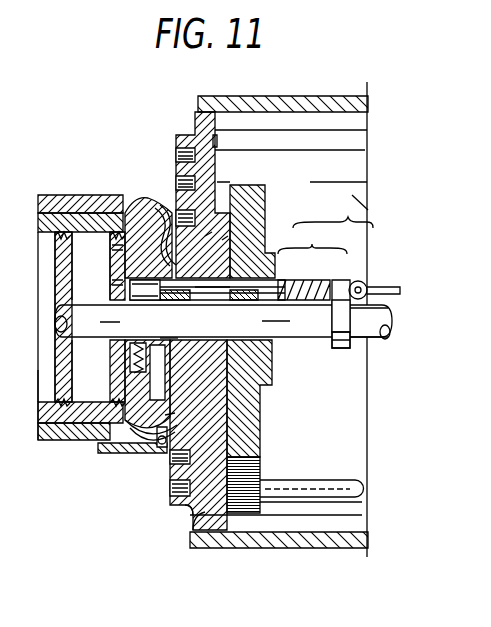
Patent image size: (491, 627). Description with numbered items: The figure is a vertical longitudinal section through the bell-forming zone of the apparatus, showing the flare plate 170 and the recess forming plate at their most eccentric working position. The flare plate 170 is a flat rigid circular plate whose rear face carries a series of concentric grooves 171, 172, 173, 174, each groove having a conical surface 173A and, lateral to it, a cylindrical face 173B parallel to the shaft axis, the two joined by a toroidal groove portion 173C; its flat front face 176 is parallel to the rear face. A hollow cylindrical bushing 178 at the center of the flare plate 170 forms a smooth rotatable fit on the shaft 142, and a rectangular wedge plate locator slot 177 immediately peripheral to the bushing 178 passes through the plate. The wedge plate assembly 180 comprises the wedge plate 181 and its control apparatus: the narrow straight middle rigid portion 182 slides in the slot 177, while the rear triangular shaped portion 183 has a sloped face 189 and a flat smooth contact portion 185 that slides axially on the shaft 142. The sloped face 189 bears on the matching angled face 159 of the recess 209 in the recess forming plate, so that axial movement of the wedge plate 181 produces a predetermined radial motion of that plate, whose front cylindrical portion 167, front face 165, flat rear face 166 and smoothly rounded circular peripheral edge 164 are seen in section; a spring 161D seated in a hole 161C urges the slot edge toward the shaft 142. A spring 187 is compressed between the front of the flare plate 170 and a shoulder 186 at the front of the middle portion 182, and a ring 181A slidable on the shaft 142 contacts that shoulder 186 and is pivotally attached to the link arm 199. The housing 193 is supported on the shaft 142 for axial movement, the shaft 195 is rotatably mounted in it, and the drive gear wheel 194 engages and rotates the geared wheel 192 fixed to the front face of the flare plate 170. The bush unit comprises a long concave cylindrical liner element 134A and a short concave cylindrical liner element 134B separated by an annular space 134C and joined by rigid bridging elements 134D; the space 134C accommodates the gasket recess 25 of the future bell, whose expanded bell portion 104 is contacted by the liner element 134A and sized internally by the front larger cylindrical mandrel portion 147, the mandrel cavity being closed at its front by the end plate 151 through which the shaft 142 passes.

The flare plate 170 is at (176, 110).
The cylindrical face 173B is at (176, 150).
The conical surface 173A is at (176, 182).
The short concave cylindrical liner element 134B is at (167, 190).
The toroidal groove portion 173C is at (234, 141).
The geared wheel 192 is at (250, 192).
The front cylindrical portion 167 is at (205, 236).
The recess 209 is at (222, 240).
The circular peripheral edge 164 is at (165, 415).
The drive gear wheel 194 is at (287, 456).
The shaft 195 is at (369, 470).
The rear triangular shaped portion 183 is at (223, 321).
The shaft 142 is at (368, 353).
The wedge plate locator slot 177 is at (240, 293).
The flat smooth contact portion 185 is at (141, 308).
The front face 165 is at (168, 338).
The hollow cylindrical bushing 178 is at (202, 296).
The narrow straight middle rigid portion 182 is at (294, 282).
The spring 187 is at (337, 282).
The shoulder 186 is at (331, 305).
The ring 181A is at (341, 343).
The link arm 199 is at (388, 281).
The wedge plate 181 is at (312, 241).
The wedge plate assembly 180 is at (333, 211).
The long concave cylindrical liner element 134A is at (83, 195).
The front larger cylindrical mandrel portion 147 is at (38, 226).
The end plate 151 is at (56, 374).
The angled face 159 is at (143, 275).
The sloped face 189 is at (125, 284).
The rear face 166 is at (125, 362).
The expanded bell portion 104 is at (78, 437).
The gasket recess 25 is at (108, 452).
The groove 171 is at (167, 455).
The annular space 134C is at (125, 200).
The hole 161C is at (133, 369).
The spring 161D is at (160, 372).
The bridging element 134D is at (115, 455).
The groove 172 is at (170, 467).
The groove 173 is at (168, 487).
The groove 174 is at (182, 512).
The front face 176 is at (200, 545).
The housing 193 is at (298, 544).